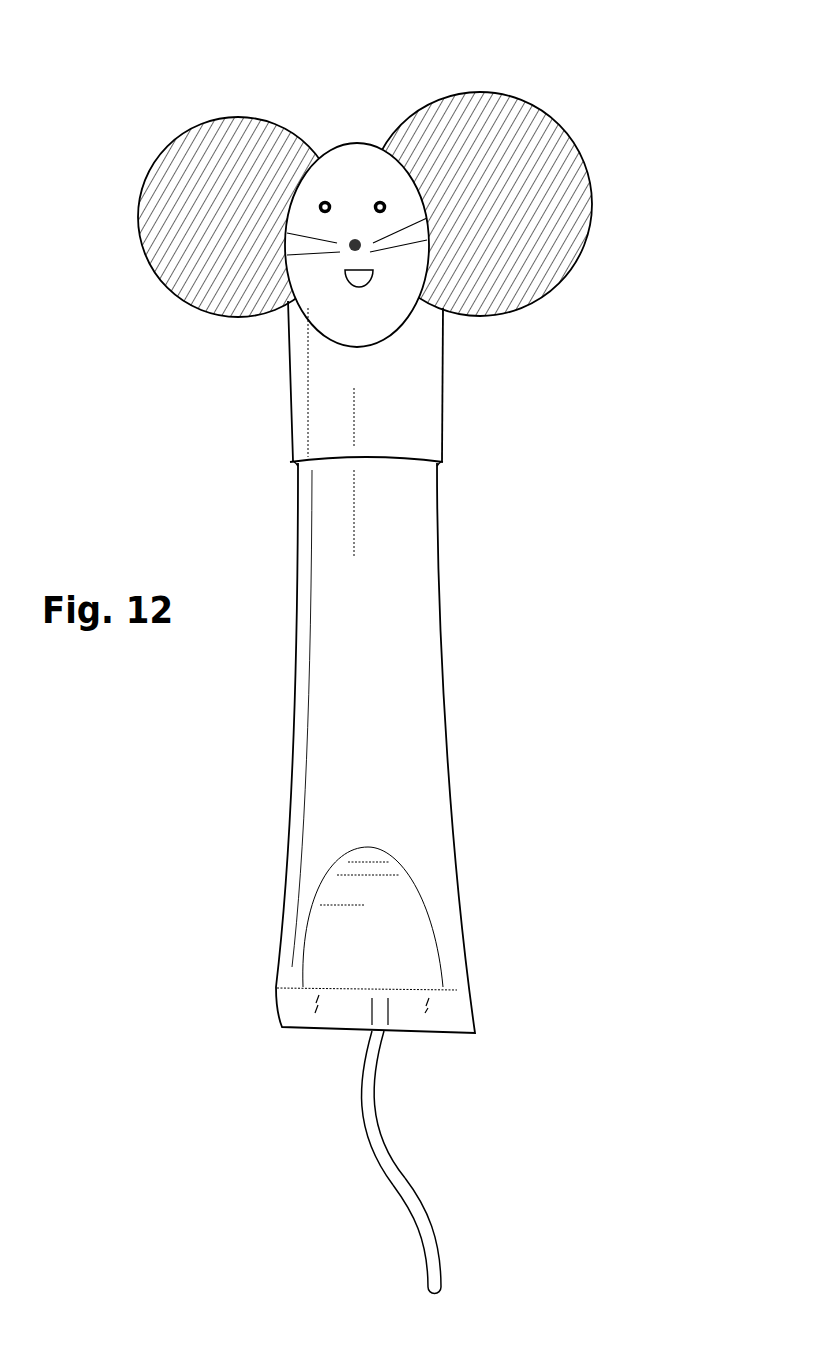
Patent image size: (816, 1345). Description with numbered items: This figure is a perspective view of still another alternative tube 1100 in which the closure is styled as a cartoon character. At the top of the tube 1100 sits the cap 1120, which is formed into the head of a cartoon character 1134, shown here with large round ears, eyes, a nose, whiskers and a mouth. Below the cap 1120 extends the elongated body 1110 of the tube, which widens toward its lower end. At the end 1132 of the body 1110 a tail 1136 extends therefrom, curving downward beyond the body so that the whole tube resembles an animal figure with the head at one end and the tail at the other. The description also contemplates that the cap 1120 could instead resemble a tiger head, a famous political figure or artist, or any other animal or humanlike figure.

The tube 1100 is at (431, 649).
The head of a cartoon character 1134 is at (350, 158).
The cap 1120 is at (418, 402).
The body 1110 is at (443, 885).
The end 1132 is at (380, 1030).
The tail 1136 is at (440, 1248).